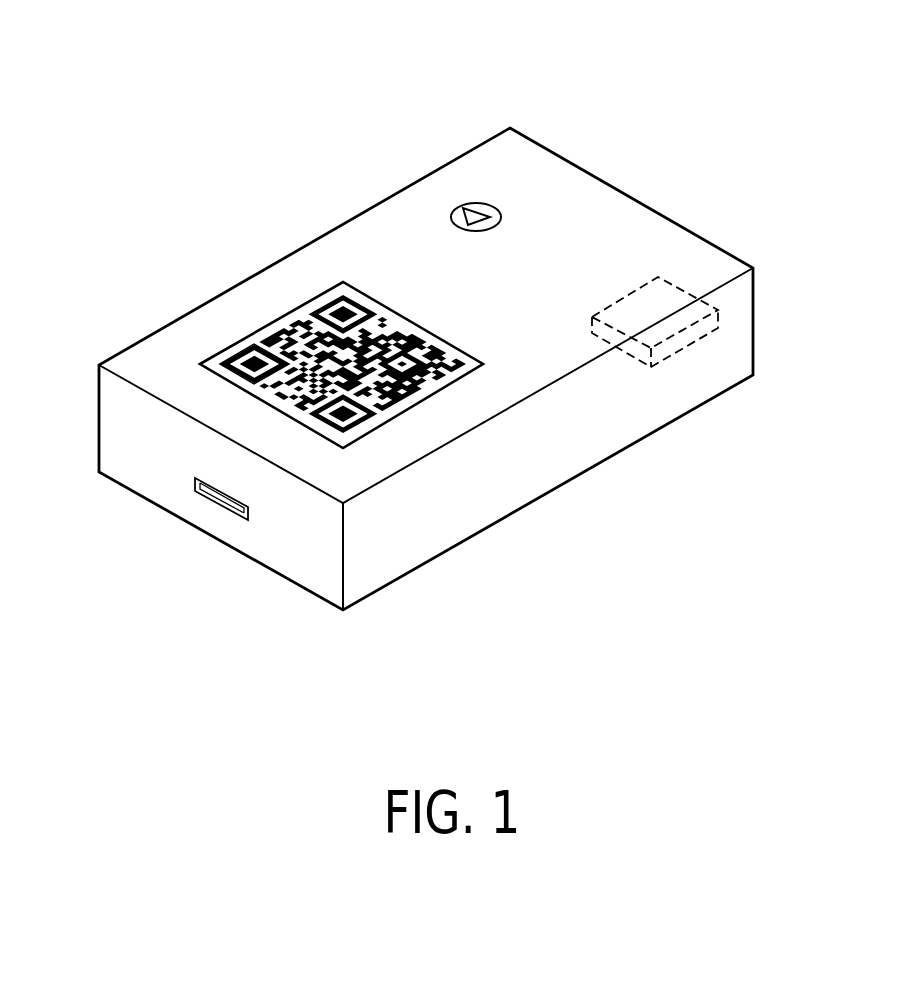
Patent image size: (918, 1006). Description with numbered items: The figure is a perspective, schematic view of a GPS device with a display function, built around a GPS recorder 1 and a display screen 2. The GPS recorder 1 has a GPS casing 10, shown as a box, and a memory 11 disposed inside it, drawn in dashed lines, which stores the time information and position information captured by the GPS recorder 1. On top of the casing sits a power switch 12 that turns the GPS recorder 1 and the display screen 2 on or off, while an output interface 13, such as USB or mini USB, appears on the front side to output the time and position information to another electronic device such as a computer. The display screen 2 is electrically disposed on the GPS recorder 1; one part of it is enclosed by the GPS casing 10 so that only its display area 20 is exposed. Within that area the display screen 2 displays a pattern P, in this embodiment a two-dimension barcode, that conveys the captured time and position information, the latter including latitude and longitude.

The GPS recorder 1 is at (525, 137).
The GPS casing 10 is at (622, 190).
The memory 11 is at (688, 292).
The power switch 12 is at (463, 207).
The output interface 13 is at (218, 500).
The display screen 2 is at (341, 300).
The display area 20 is at (251, 303).
The pattern P is at (302, 330).